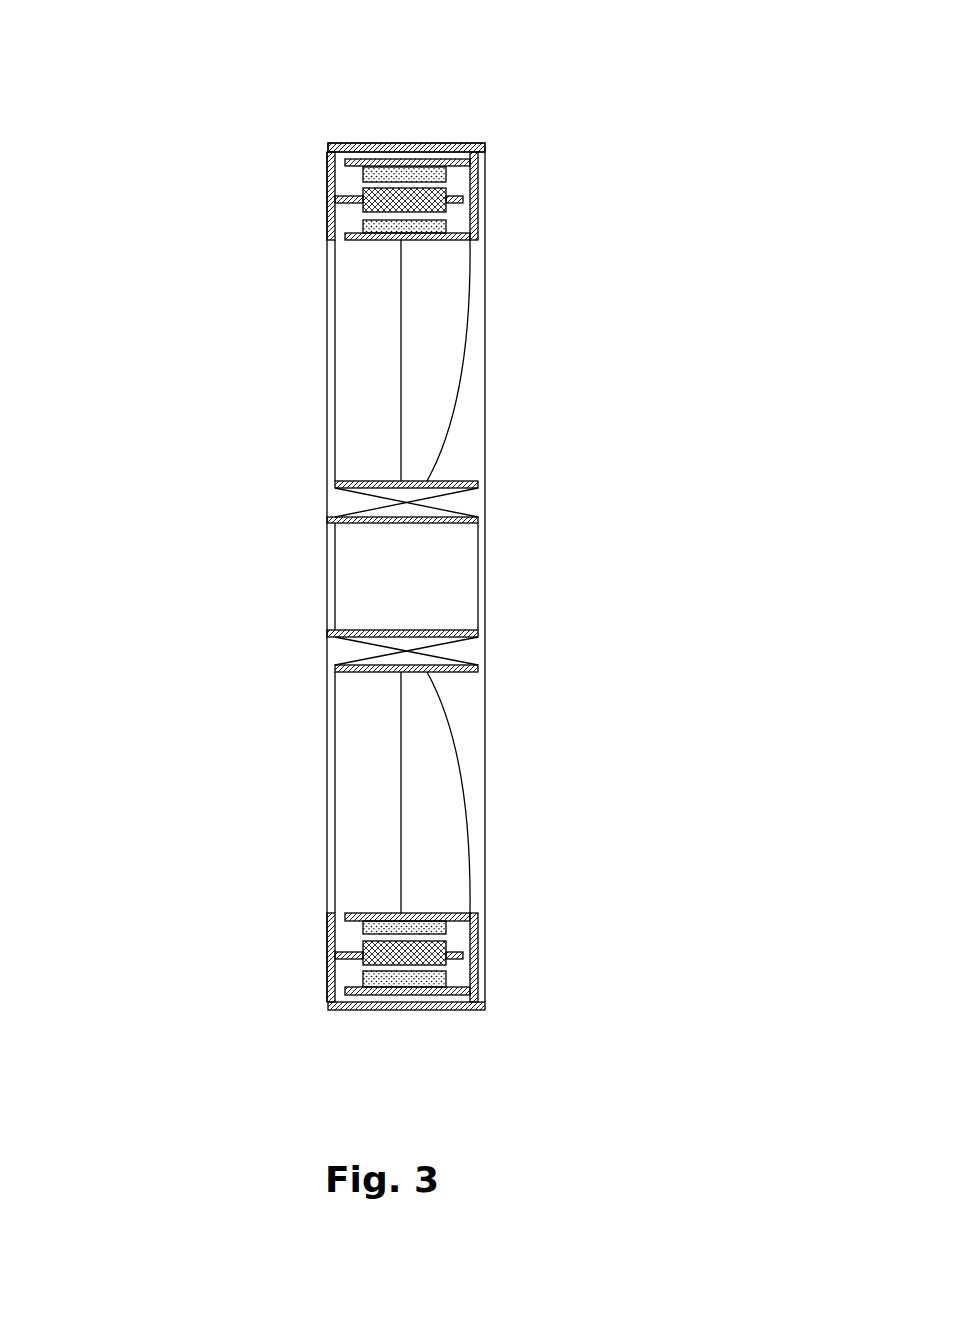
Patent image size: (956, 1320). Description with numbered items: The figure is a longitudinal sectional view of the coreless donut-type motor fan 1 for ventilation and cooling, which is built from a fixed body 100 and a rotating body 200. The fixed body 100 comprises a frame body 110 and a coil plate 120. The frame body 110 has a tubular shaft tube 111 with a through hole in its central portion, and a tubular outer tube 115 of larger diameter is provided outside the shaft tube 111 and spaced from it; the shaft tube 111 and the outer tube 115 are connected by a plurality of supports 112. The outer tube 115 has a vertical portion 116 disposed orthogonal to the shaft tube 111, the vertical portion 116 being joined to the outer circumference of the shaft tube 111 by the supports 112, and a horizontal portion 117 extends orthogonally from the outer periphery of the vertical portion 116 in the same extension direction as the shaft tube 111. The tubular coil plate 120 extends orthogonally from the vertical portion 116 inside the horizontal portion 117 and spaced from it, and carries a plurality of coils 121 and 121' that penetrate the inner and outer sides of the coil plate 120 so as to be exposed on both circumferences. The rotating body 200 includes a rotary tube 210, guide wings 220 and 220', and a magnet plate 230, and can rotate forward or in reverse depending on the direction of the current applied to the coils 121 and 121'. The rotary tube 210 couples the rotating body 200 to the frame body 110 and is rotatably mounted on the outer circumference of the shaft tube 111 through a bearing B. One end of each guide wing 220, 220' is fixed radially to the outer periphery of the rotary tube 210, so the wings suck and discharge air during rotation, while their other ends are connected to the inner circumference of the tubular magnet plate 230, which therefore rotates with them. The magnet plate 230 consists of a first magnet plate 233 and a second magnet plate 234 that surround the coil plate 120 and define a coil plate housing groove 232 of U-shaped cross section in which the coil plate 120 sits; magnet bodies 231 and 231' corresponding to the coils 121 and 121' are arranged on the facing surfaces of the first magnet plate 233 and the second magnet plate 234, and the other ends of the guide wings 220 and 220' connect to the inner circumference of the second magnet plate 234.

The coreless donut-type motor fan 1 is at (121, 60).
The fixed body 100 is at (203, 541).
The frame body 110 is at (183, 390).
The shaft tube 111 is at (353, 525).
The supports 112 is at (328, 820).
The outer tube 115 is at (205, 325).
The vertical portion 116 is at (336, 200).
The horizontal portion 117 is at (358, 143).
The coil plate 120 is at (352, 197).
The coil 121 is at (420, 127).
The coil 121' is at (404, 1030).
The rotating body 200 is at (512, 363).
The rotary tube 210 is at (470, 680).
The guide wing 220 is at (503, 360).
The guide wing 220' is at (508, 792).
The magnet plate 230 is at (642, 128).
The magnet body 231 is at (476, 966).
The magnet body 231' is at (480, 933).
The coil plate housing groove 232 is at (460, 186).
The first magnet plate 233 is at (458, 160).
The second magnet plate 234 is at (443, 240).
The bearing B is at (355, 652).